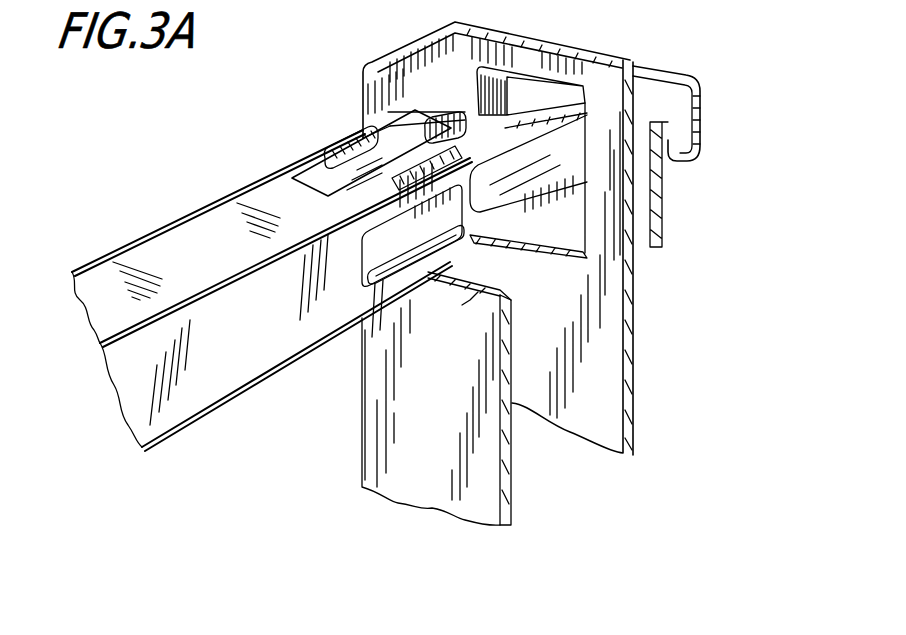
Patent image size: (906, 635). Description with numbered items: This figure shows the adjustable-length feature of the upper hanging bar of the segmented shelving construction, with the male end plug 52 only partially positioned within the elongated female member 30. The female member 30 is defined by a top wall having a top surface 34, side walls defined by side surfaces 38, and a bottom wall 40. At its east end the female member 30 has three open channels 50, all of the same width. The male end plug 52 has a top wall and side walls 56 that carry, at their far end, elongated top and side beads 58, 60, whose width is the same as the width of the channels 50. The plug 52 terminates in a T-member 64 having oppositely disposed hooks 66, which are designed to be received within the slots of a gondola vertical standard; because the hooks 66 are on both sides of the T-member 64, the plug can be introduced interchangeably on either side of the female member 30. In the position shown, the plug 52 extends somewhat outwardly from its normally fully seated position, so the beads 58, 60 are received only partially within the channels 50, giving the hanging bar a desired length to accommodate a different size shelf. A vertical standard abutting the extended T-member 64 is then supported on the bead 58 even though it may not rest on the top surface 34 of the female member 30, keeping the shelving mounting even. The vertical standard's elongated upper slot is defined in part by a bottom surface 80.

The elongated female member 30 is at (272, 278).
The top surface 34 is at (267, 224).
The side surfaces 38 is at (234, 350).
The bottom wall 40 is at (453, 355).
The open channels 50 is at (328, 186).
The male end plug 52 is at (565, 228).
The side walls 56 is at (497, 248).
The top elongated bead 58 is at (540, 72).
The side elongated beads 60 is at (428, 238).
The T-member 64 is at (658, 72).
The hooks 66 is at (700, 142).
The bottom surface 80 is at (478, 298).